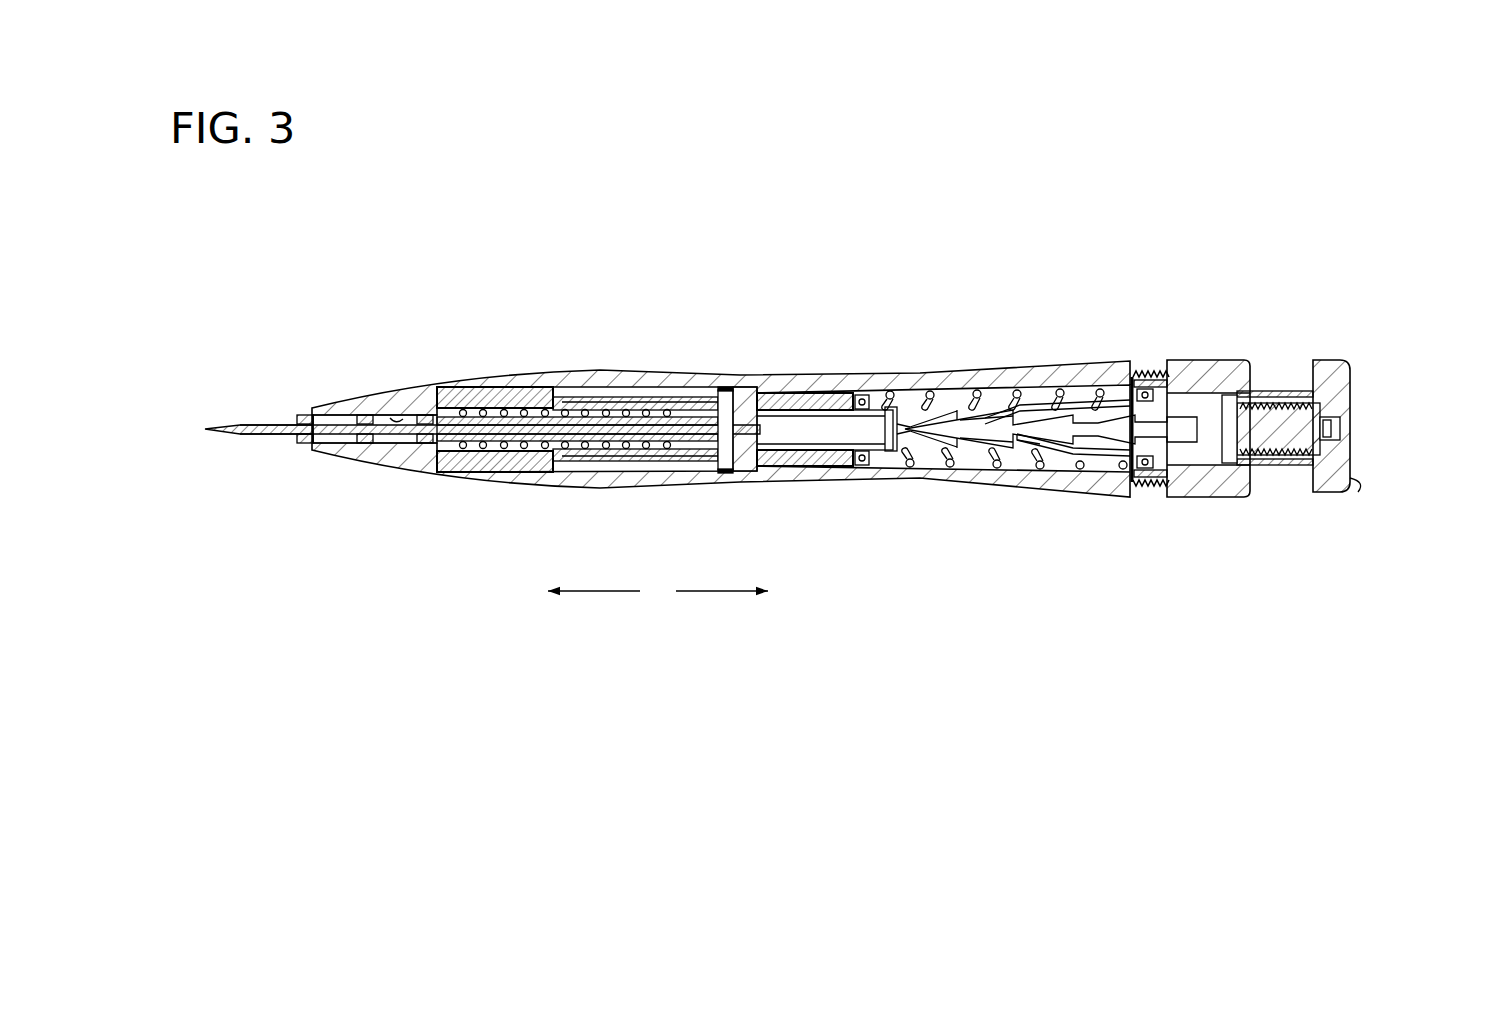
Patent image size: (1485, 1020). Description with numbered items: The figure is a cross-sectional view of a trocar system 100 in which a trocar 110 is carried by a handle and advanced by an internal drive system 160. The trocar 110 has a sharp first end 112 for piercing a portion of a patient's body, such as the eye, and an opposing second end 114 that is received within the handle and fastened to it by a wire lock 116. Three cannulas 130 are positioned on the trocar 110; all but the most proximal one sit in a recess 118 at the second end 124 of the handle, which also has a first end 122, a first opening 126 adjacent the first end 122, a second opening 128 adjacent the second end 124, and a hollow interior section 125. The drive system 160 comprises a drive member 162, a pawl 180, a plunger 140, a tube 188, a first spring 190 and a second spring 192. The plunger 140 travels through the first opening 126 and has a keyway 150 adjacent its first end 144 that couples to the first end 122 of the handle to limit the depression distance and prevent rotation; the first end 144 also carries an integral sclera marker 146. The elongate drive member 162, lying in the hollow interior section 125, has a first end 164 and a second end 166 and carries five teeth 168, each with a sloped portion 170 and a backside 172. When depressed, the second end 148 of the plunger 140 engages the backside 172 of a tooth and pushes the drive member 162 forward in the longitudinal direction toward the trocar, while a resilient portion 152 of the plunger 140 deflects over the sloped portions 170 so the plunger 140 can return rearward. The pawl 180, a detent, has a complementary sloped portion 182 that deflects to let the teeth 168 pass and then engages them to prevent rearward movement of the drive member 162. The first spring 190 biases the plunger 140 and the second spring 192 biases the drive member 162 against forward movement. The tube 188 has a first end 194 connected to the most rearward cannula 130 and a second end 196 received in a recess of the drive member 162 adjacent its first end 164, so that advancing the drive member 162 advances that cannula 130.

The trocar system 100 is at (543, 270).
The trocar 110 is at (240, 418).
The first end of the trocar 112 is at (213, 428).
The second end of the trocar 114 is at (746, 400).
The wire lock 116 is at (722, 404).
The recess 118 is at (392, 417).
The first end of the handle 122 is at (1147, 362).
The second end of the handle 124 is at (335, 448).
The hollow interior section 125 is at (1083, 414).
The first opening 126 is at (1178, 364).
The second opening 128 is at (310, 445).
The cannulas 130 is at (298, 410).
The plunger 140 is at (1350, 415).
The first end of the plunger 144 is at (1350, 450).
The sclera marker 146 is at (1358, 493).
The second end of the plunger 148 is at (1018, 432).
The keyway 150 is at (1233, 364).
The resilient portion of the plunger 152 is at (1070, 452).
The drive system 160 is at (1105, 474).
The drive member 162 is at (951, 402).
The first end of the drive member 164 is at (675, 447).
The second end of the drive member 166 is at (1212, 467).
The teeth 168 is at (993, 427).
The sloped portion of the teeth 170 is at (983, 454).
The backside of the teeth 172 is at (1020, 440).
The pawl 180 is at (916, 403).
The sloped portion of the pawl 182 is at (919, 406).
The tube 188 is at (535, 416).
The first spring 190 is at (943, 462).
The second spring 192 is at (470, 418).
The first end of the tube 194 is at (455, 445).
The second end of the tube 196 is at (682, 403).